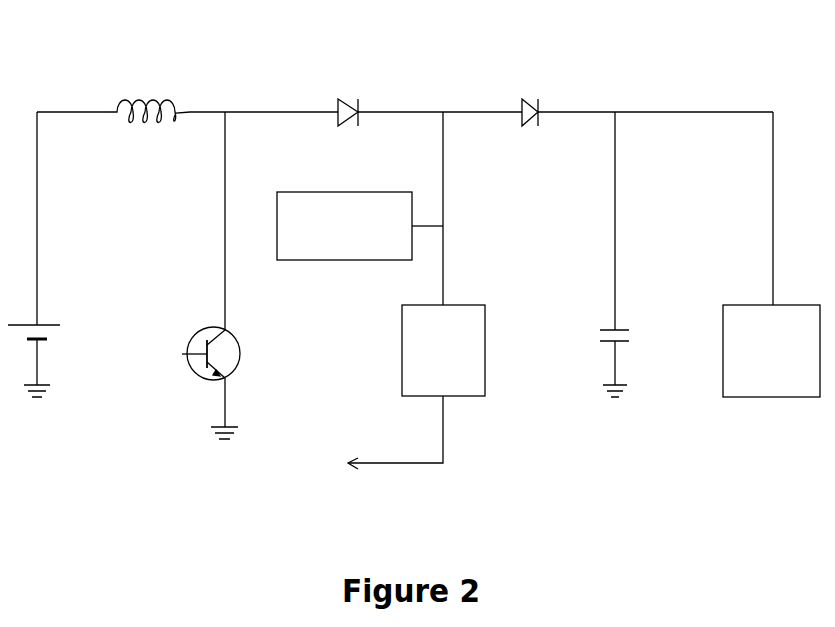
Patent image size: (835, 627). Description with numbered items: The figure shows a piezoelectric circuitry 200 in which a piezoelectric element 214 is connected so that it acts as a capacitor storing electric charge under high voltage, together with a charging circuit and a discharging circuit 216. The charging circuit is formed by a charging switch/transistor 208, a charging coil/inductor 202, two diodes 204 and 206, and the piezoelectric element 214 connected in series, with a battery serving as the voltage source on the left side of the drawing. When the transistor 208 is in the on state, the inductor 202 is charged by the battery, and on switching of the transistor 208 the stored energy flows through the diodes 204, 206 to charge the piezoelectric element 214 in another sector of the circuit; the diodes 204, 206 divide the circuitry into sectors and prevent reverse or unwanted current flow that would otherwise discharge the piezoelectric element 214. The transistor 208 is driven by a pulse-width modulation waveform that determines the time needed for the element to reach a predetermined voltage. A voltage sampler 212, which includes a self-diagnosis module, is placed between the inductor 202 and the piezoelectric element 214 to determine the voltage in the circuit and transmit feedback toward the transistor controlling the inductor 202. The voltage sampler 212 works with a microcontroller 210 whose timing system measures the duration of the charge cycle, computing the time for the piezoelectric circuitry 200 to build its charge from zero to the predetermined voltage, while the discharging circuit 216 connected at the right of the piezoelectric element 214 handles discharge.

The piezoelectric circuitry 200 is at (38, 27).
The charging coil/inductor 202 is at (148, 96).
The diode 204 is at (340, 98).
The diode 206 is at (522, 98).
The charging switch/transistor 208 is at (198, 367).
The microcontroller 210 is at (360, 211).
The voltage sampler 212 is at (410, 387).
The piezoelectric element 214 is at (588, 342).
The discharging circuit 216 is at (761, 330).